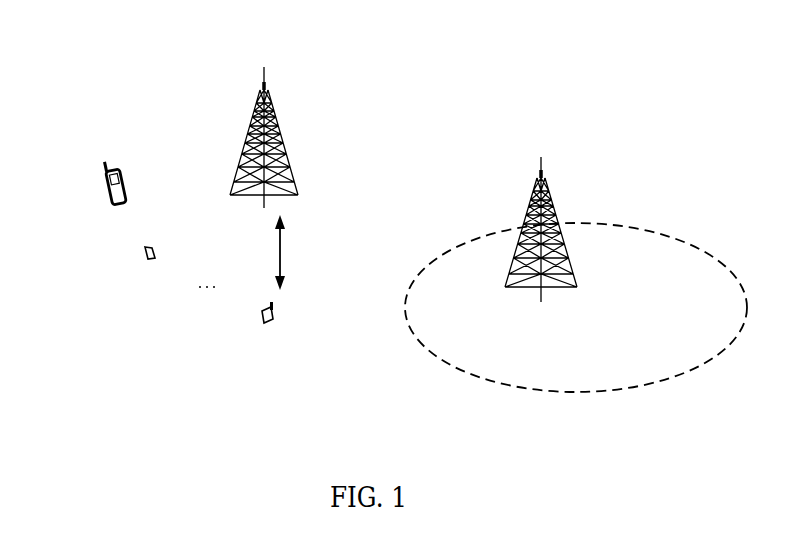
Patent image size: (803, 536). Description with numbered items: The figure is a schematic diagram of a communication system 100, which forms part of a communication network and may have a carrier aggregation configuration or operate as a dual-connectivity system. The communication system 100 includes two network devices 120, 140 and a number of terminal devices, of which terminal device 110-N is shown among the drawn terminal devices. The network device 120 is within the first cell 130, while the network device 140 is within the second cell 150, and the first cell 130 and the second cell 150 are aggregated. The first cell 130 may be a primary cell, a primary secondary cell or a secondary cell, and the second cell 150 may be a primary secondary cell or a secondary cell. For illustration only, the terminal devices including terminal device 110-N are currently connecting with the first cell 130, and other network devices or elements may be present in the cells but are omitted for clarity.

The communication system 100 is at (82, 52).
The terminal device 110-N is at (258, 316).
The network device 120 is at (279, 137).
The first cell 130 is at (375, 185).
The network device 140 is at (542, 175).
The second cell 150 is at (717, 260).